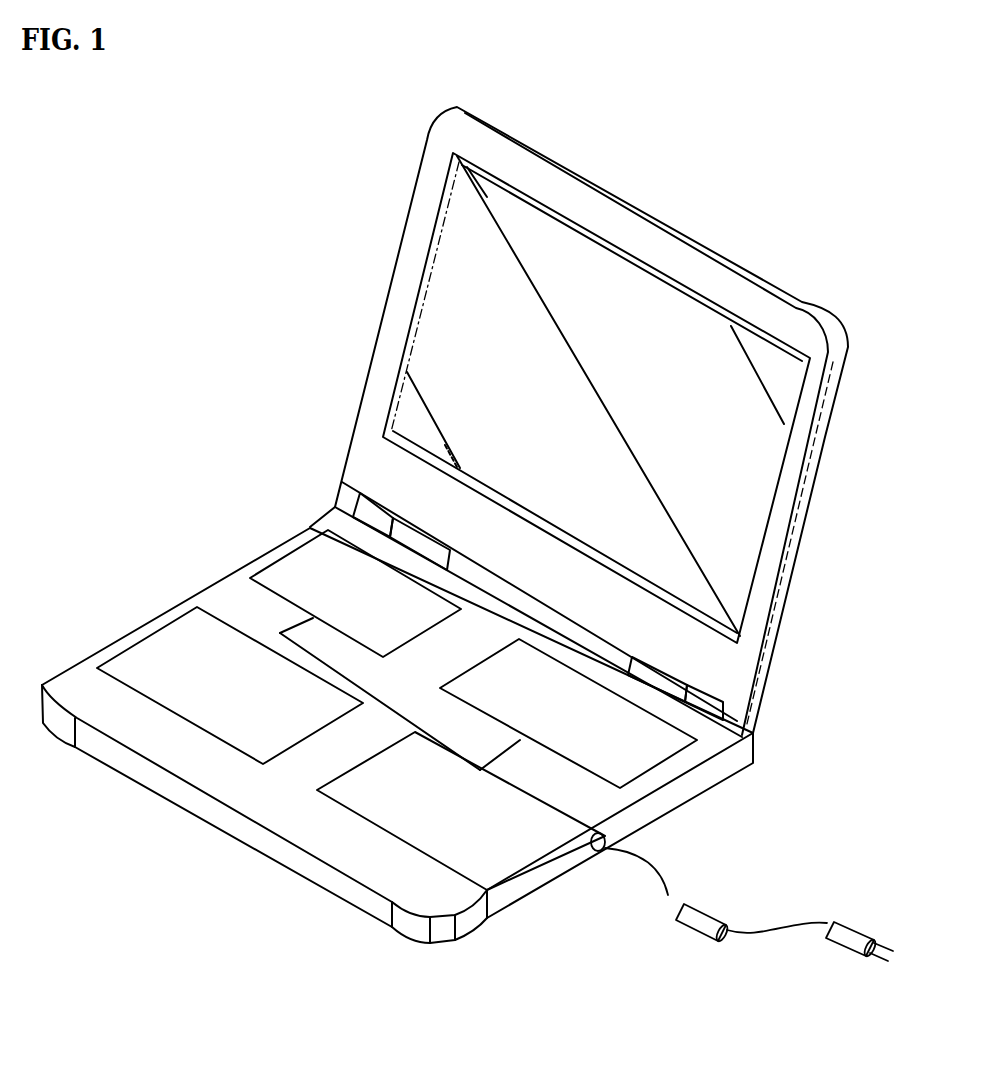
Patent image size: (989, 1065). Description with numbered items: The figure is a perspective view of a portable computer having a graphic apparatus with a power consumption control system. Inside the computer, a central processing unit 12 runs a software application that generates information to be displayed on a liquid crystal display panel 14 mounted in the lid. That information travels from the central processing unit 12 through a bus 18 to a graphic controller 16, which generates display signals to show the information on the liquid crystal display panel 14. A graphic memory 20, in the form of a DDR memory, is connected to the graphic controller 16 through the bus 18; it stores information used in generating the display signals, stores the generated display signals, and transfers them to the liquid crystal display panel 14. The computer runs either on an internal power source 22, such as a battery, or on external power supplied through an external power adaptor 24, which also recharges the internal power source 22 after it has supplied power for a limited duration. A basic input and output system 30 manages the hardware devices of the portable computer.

The central processing unit 12 is at (170, 653).
The liquid crystal display panel 14 is at (465, 309).
The graphic controller 16 is at (315, 565).
The bus 18 is at (280, 634).
The graphic memory 20 is at (610, 713).
The internal power source 22 is at (522, 885).
The external power adaptor 24 is at (598, 850).
The basic input and output system 30 is at (405, 818).